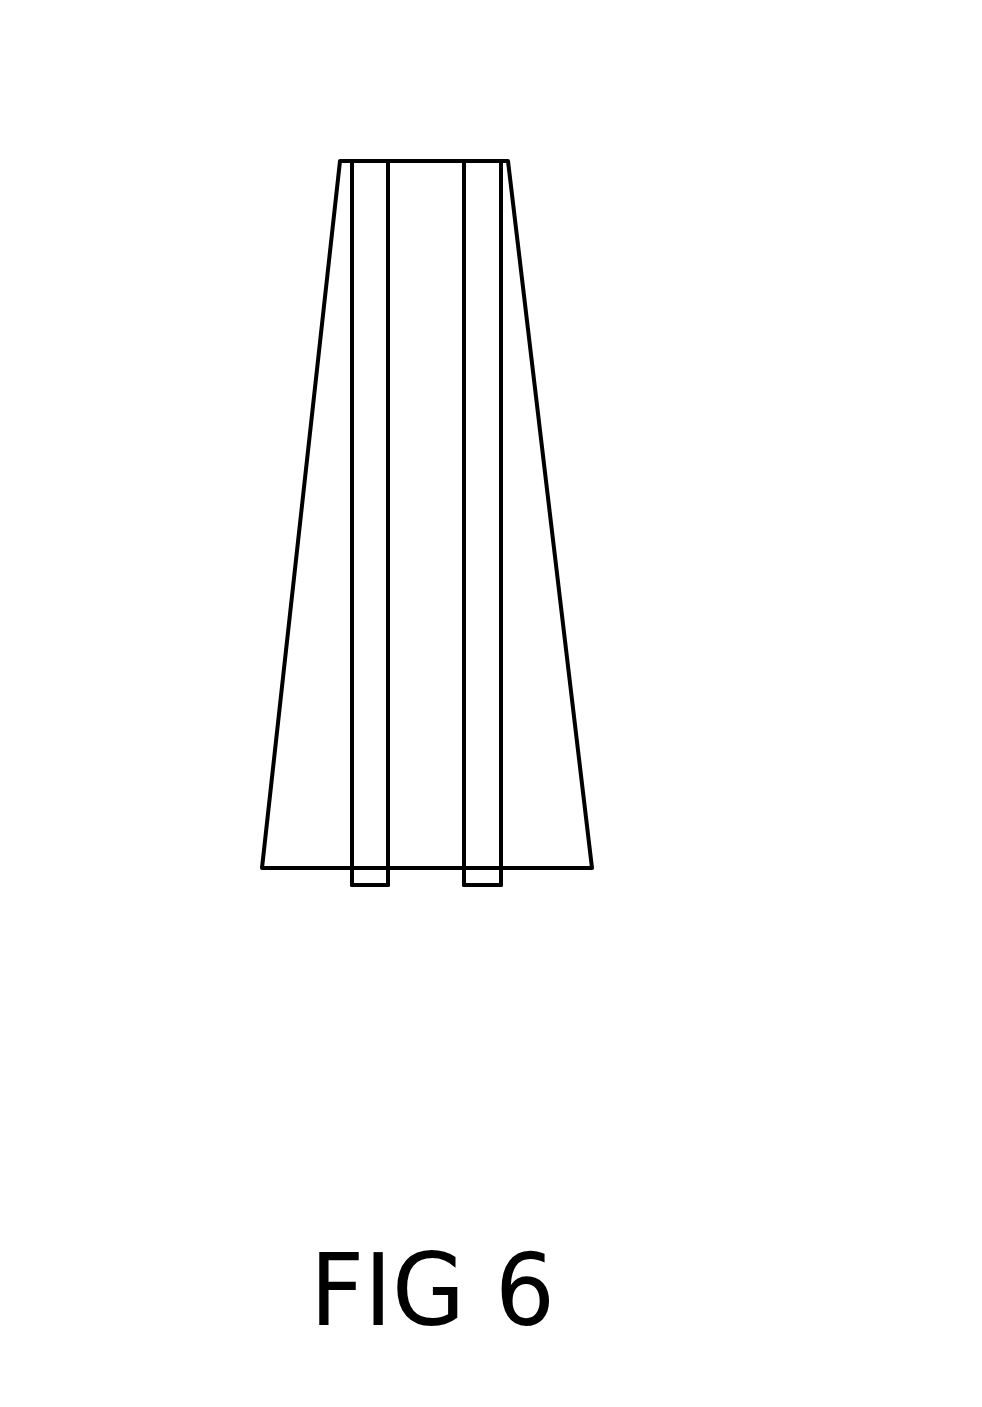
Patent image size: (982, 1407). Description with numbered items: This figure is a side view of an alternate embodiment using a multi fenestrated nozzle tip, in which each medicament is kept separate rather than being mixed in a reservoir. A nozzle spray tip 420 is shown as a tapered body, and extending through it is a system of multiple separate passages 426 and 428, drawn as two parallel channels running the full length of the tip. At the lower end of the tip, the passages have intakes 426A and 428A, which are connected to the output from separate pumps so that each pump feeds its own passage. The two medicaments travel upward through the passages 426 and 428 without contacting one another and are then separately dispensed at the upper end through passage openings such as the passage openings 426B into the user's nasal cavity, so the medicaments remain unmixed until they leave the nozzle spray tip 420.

The nozzle spray tip 420 is at (230, 347).
The separate passage 426 is at (368, 467).
The separate passage 428 is at (485, 465).
The passage opening 426B is at (370, 163).
The intake 426A is at (352, 903).
The intake 428A is at (503, 905).